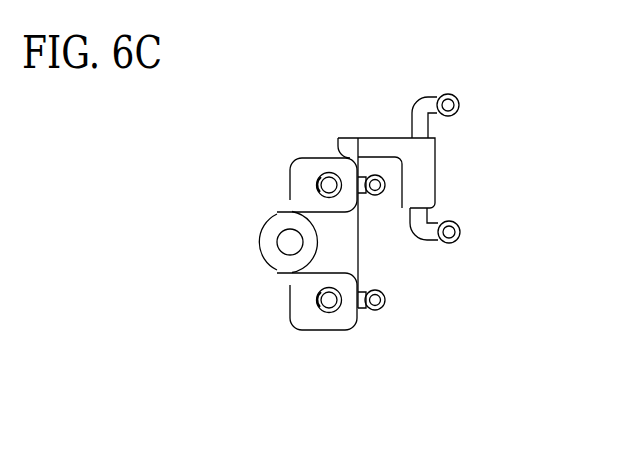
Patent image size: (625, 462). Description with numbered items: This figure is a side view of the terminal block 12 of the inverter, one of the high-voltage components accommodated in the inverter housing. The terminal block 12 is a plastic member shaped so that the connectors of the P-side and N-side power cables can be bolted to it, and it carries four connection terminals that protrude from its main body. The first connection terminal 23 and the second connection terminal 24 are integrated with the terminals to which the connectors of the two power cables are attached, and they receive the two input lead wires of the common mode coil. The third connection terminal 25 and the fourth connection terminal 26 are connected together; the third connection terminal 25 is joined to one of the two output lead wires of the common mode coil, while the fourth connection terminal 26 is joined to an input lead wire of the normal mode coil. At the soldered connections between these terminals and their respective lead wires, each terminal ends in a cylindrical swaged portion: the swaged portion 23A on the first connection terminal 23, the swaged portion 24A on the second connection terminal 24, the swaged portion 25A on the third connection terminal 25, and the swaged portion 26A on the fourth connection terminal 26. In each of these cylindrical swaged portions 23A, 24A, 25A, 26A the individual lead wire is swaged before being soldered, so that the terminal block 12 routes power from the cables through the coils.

The terminal block 12 is at (310, 316).
The first connection terminal 23 is at (361, 180).
The cylindrical swaged portion 23A is at (374, 196).
The second connection terminal 24 is at (360, 310).
The cylindrical swaged portion 24A is at (386, 303).
The third connection terminal 25 is at (426, 238).
The cylindrical swaged portion 25A is at (460, 231).
The fourth connection terminal 26 is at (420, 105).
The cylindrical swaged portion 26A is at (459, 103).